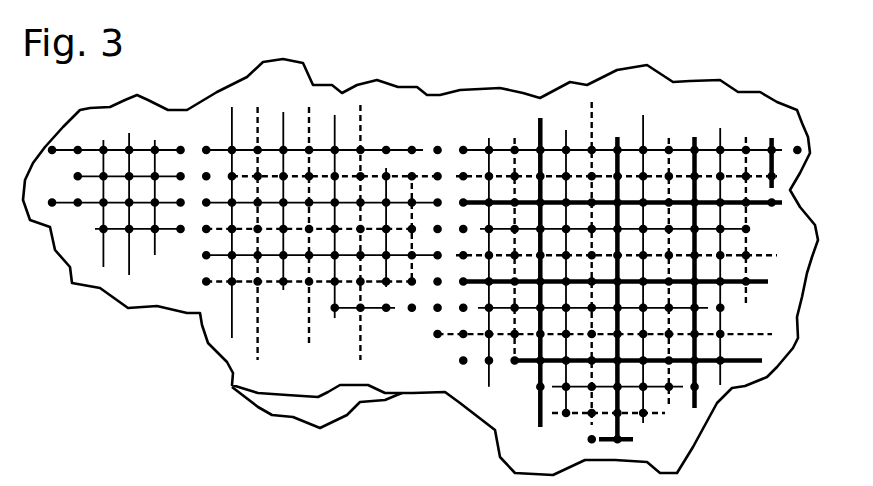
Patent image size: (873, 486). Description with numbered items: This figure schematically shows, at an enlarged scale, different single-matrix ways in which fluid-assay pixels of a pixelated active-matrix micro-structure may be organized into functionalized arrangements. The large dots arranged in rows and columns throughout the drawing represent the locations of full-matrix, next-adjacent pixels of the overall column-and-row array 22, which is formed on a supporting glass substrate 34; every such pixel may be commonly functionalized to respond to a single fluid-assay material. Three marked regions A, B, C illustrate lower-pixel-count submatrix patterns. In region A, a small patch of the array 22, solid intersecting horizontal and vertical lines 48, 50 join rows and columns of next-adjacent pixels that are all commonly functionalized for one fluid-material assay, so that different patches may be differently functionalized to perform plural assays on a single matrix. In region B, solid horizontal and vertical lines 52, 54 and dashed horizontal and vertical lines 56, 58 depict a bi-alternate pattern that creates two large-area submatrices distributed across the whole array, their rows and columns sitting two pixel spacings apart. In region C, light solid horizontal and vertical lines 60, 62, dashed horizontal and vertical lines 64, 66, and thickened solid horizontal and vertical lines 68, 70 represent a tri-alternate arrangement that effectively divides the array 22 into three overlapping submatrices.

The column-and-row array 22 is at (333, 397).
The substrate 34 is at (300, 407).
The solid horizontal line 48 is at (92, 147).
The solid vertical line 50 is at (102, 250).
The solid horizontal line 52 is at (225, 149).
The solid vertical line 54 is at (235, 118).
The dashed horizontal line 56 is at (213, 287).
The dashed vertical line 58 is at (256, 352).
The light solid horizontal line 60 is at (480, 149).
The light solid vertical line 62 is at (490, 141).
The dashed horizontal line 64 is at (450, 338).
The dashed vertical line 66 is at (513, 346).
The thickened solid horizontal line 68 is at (757, 365).
The thickened solid vertical line 70 is at (720, 378).
The region A is at (155, 121).
The region B is at (370, 123).
The region C is at (698, 97).